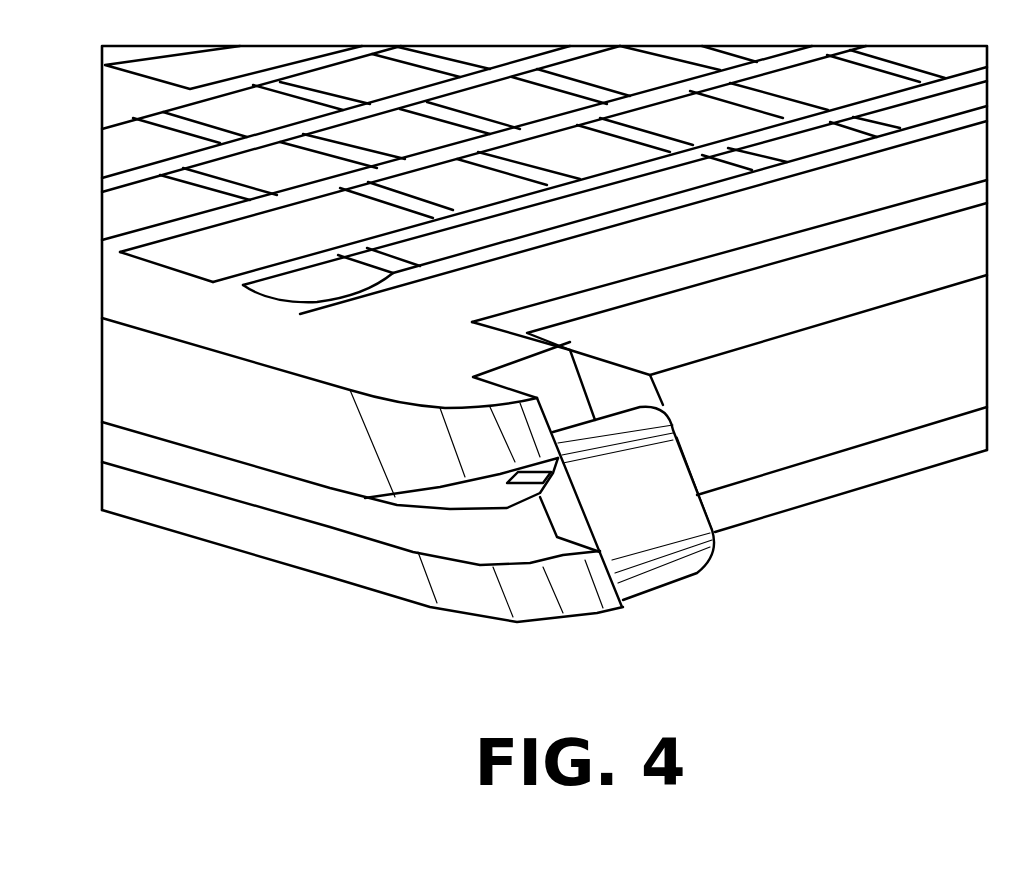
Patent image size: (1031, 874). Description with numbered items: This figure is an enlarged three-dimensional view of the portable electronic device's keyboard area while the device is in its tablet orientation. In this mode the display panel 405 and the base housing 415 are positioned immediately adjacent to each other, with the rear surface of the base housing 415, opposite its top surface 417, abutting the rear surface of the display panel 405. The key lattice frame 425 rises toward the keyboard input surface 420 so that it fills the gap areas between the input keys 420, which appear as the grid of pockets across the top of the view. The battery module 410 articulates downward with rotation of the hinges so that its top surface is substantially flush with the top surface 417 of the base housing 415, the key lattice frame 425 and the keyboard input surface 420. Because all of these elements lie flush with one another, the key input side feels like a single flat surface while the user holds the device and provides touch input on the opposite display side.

The display panel 405 is at (118, 495).
The battery module 410 is at (860, 480).
The base housing 415 is at (118, 388).
The top surface of the base housing 417 is at (748, 207).
The keyboard input surface 420 is at (282, 287).
The key lattice frame 425 is at (403, 272).